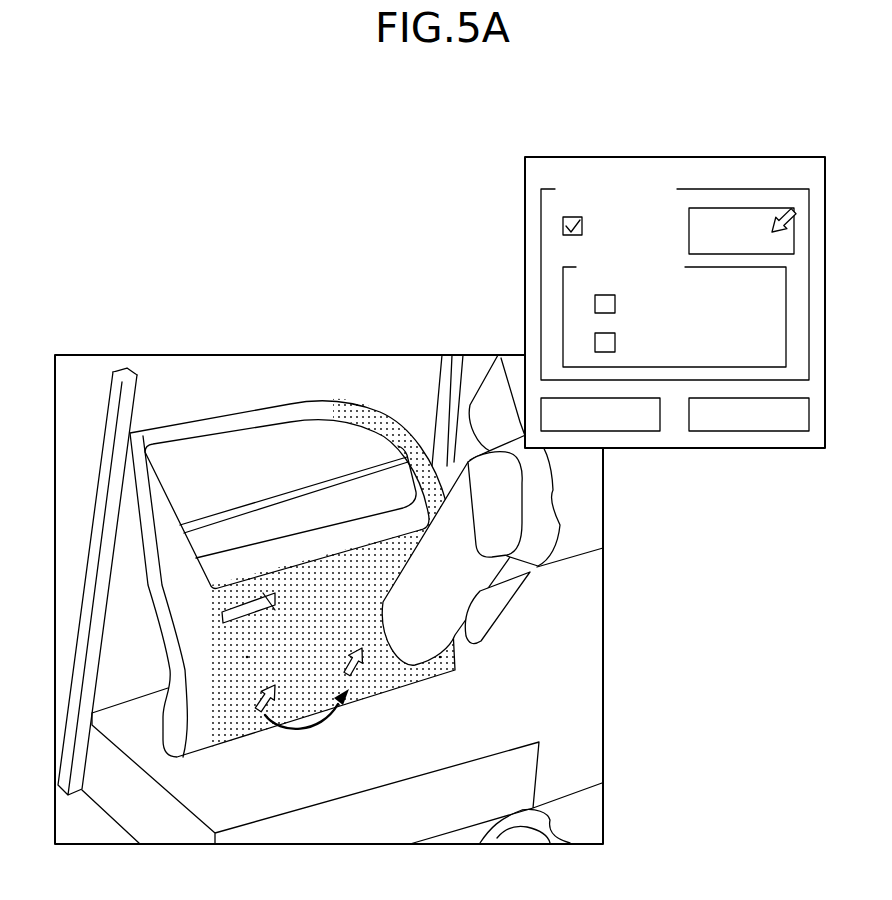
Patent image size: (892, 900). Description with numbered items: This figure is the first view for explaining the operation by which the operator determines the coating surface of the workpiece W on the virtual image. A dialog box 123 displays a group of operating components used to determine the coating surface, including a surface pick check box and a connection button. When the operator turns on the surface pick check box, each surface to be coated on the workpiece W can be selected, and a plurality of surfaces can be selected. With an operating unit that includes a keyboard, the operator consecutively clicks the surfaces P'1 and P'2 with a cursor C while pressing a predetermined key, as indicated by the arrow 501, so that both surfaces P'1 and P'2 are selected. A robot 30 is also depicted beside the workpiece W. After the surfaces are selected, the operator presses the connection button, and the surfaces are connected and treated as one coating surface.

The dialog box 123 is at (722, 157).
The cursor C is at (791, 206).
The workpiece W is at (216, 404).
The surface P'1 is at (177, 672).
The surface P'2 is at (484, 666).
The robot 30 is at (550, 584).
The arrow 501 is at (320, 724).